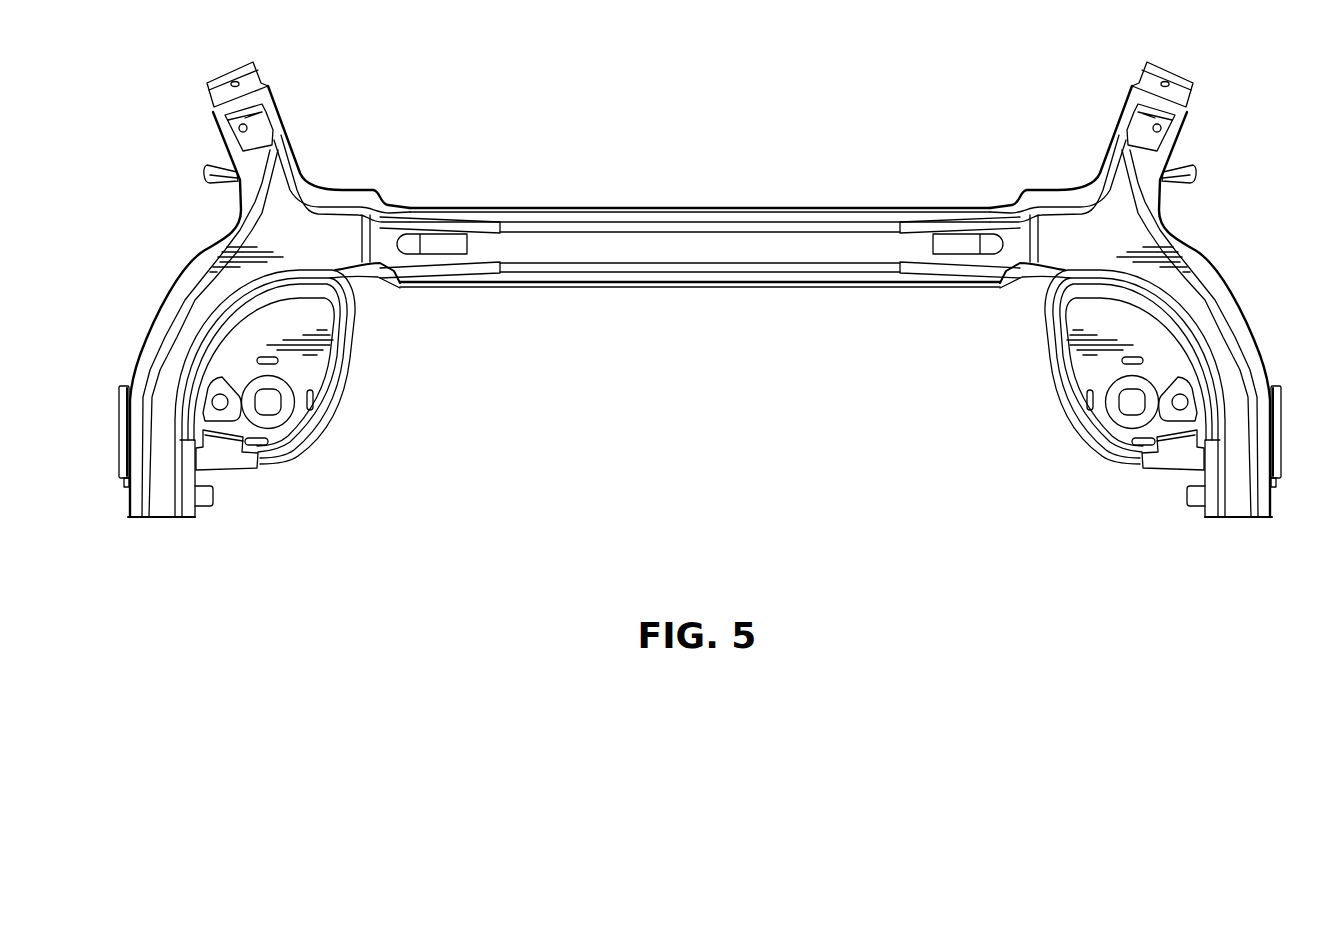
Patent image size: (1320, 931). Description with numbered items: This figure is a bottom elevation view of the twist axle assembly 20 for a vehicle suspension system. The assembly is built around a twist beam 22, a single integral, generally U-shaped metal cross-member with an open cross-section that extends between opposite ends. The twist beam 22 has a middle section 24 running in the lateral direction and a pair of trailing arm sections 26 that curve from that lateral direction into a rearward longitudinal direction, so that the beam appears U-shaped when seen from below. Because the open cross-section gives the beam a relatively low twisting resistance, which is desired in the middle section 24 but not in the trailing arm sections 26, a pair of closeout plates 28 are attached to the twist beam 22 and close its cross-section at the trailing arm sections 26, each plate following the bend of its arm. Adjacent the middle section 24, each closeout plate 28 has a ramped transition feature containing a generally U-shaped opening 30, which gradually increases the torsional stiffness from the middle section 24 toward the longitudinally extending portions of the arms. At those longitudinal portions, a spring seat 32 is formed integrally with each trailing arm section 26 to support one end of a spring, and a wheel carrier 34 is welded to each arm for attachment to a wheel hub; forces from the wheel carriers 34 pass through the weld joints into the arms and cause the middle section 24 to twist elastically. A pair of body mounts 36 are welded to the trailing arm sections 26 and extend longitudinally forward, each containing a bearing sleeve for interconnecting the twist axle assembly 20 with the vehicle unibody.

The twist axle assembly 20 is at (724, 150).
The twist beam 22 is at (768, 200).
The middle section 24 is at (703, 288).
The trailing arm sections 26 is at (189, 258).
The closeout plates 28 is at (330, 246).
The U-shaped opening 30 is at (441, 255).
The spring seat 32 is at (298, 430).
The wheel carrier 34 is at (118, 438).
The body mounts 36 is at (238, 79).